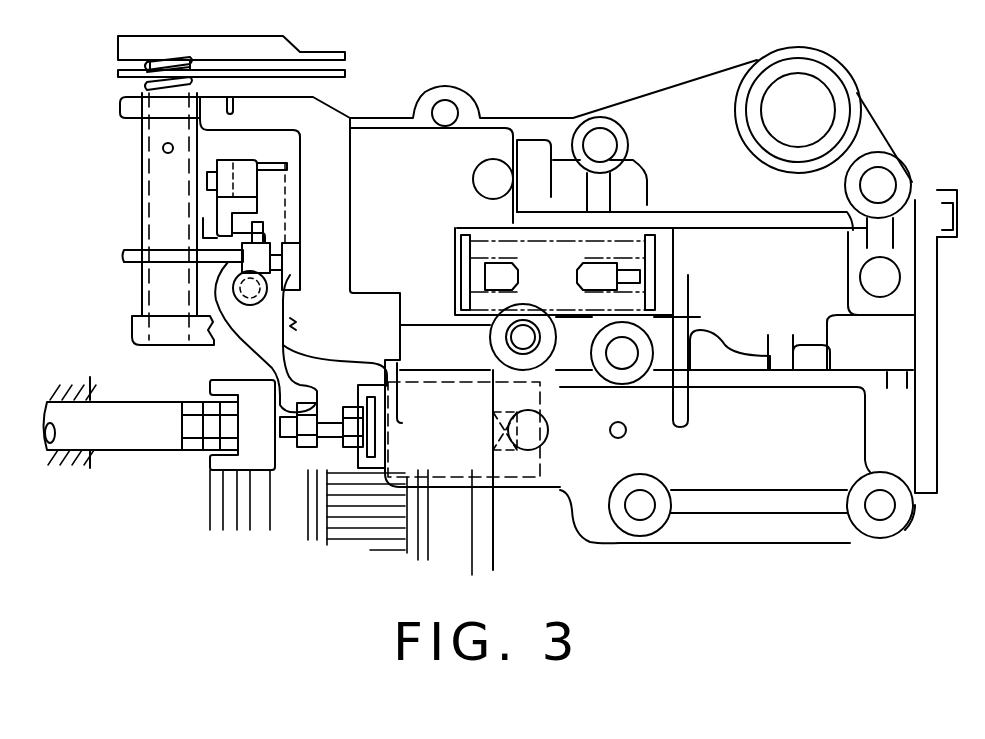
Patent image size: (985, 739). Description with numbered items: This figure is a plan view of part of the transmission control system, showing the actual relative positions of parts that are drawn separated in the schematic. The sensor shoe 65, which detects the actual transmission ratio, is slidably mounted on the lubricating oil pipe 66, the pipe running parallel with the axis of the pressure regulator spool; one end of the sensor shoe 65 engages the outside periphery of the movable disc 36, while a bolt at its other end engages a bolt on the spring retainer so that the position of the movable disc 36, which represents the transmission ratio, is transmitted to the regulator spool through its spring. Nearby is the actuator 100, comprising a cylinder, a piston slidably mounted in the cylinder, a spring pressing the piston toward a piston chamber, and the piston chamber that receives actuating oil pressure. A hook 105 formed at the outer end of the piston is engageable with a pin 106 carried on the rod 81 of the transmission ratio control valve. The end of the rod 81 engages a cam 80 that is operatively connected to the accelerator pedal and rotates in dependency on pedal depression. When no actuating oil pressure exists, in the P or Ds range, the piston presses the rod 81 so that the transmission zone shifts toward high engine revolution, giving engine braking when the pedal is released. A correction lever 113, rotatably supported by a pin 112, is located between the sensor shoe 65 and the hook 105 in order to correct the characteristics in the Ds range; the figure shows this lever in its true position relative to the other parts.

The shaft 36 is at (492, 543).
The sensor shoe 65 is at (260, 450).
The lubricating oil pipe 66 is at (148, 442).
The cam 80 is at (124, 257).
The rod 81 is at (307, 283).
The actuator 100 is at (291, 159).
The hook 105 is at (220, 213).
The pin 106 is at (263, 233).
The pin 112 is at (253, 302).
The correction lever 113 is at (243, 353).